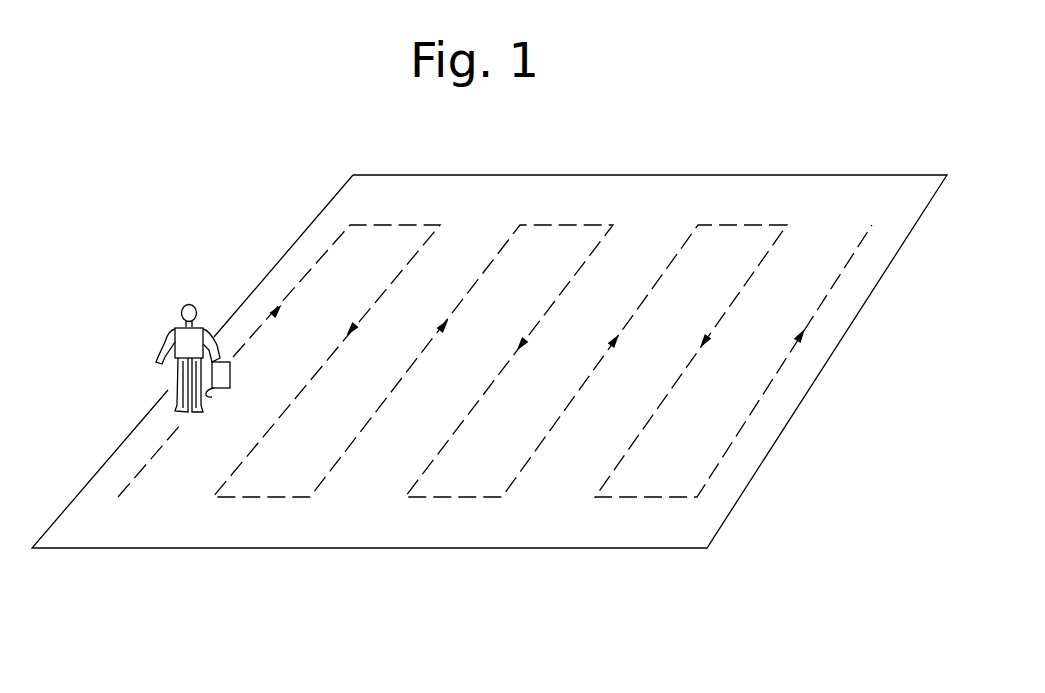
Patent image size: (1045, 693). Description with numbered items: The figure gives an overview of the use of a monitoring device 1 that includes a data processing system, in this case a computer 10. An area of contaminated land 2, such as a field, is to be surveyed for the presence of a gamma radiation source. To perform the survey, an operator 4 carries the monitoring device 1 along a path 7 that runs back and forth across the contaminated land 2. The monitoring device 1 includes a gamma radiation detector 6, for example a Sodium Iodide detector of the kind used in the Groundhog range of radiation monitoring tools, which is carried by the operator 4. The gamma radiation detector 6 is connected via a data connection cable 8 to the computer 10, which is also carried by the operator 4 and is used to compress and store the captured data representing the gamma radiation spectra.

The monitoring device 1 is at (163, 423).
The contaminated land 2 is at (755, 188).
The operator 4 is at (188, 307).
The gamma radiation detector 6 is at (230, 368).
The path 7 is at (323, 255).
The data connection cable 8 is at (212, 397).
The computer 10 is at (185, 352).